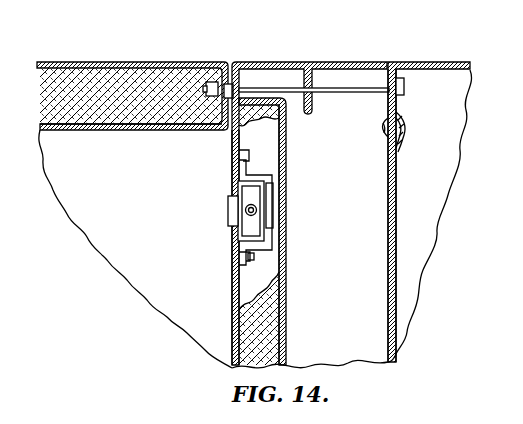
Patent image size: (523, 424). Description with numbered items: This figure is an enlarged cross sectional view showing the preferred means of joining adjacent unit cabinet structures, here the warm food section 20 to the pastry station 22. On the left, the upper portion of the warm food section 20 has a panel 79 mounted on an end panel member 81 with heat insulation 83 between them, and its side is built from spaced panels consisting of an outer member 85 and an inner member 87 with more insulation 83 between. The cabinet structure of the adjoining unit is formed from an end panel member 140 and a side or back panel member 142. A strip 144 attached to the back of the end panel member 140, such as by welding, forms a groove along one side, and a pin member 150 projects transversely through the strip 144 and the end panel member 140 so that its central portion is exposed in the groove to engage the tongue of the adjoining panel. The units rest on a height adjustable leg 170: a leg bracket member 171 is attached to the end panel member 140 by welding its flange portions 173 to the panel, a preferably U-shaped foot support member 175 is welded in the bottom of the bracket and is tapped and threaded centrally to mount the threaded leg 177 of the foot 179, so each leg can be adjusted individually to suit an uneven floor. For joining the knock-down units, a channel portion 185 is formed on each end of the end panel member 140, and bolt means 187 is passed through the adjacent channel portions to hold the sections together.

The warm food section 20 is at (180, 197).
The pastry station 22 is at (432, 196).
The panel 79 is at (287, 259).
The end panel member 81 is at (233, 282).
The heat insulation 83 is at (120, 62).
The outer member 85 is at (70, 62).
The inner member 87 is at (108, 124).
The end panel member 140 is at (392, 218).
The side or back panel member 142 is at (470, 70).
The strip 144 is at (398, 148).
The pin member 150 is at (400, 128).
The leg 170 is at (288, 231).
The leg bracket member 171 is at (275, 177).
The flange portion 173 is at (240, 146).
The foot support member 175 is at (248, 218).
The threaded leg 177 is at (256, 208).
The foot 179 is at (232, 198).
The channel portion 185 is at (336, 62).
The bolt means 187 is at (346, 92).